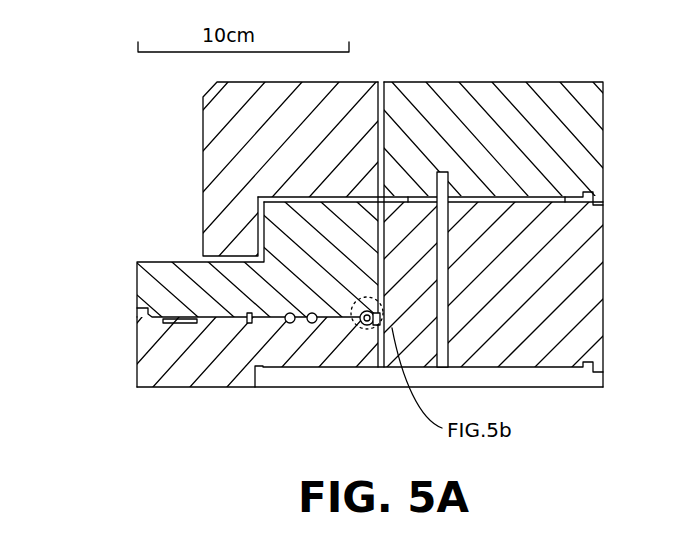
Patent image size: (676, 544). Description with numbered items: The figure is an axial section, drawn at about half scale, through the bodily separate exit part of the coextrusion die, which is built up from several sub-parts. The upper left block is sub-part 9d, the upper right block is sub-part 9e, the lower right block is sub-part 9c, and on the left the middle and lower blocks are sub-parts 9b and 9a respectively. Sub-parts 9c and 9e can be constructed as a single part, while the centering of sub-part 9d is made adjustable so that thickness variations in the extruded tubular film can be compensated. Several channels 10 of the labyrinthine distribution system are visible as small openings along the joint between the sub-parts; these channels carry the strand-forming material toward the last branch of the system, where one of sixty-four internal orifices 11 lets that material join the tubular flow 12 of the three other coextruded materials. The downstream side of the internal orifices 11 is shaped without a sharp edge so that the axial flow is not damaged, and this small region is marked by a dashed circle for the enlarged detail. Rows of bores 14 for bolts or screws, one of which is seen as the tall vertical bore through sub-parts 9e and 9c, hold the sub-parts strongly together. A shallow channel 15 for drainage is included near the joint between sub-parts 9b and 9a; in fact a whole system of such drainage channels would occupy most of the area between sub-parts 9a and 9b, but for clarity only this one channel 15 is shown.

The sub-part 9a is at (152, 366).
The sub-part 9b is at (162, 287).
The sub-part 9c is at (582, 297).
The sub-part 9d is at (212, 130).
The sub-part 9e is at (586, 158).
The channels 10 is at (250, 324).
The internal orifices 11 is at (366, 326).
The tubular flow 12 is at (385, 326).
The bores 14 is at (441, 358).
The channel 15 is at (163, 322).